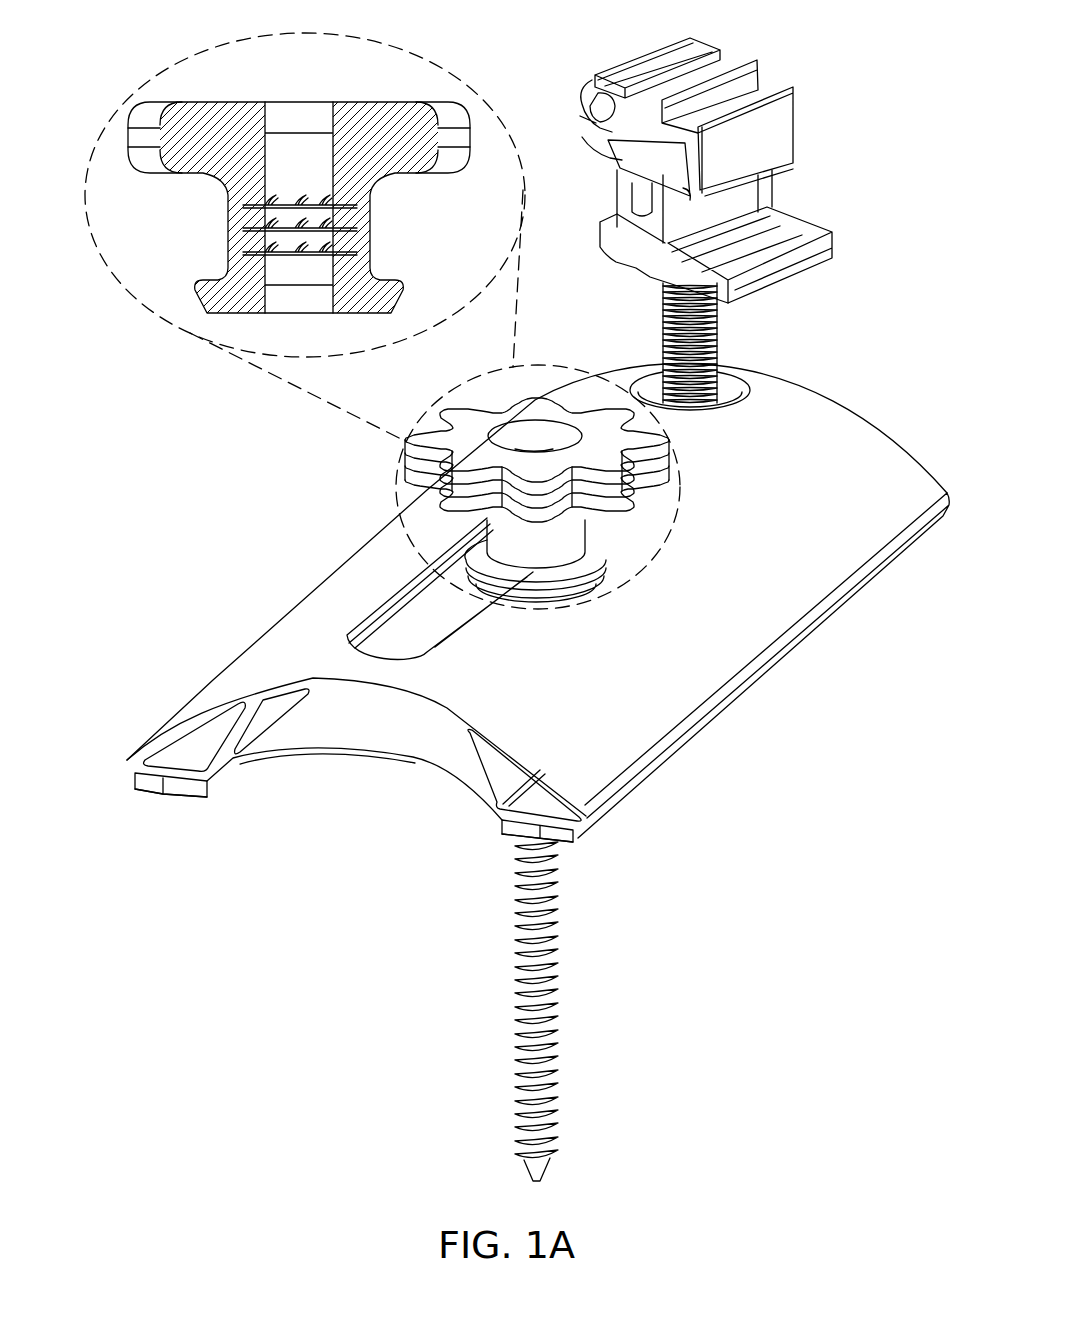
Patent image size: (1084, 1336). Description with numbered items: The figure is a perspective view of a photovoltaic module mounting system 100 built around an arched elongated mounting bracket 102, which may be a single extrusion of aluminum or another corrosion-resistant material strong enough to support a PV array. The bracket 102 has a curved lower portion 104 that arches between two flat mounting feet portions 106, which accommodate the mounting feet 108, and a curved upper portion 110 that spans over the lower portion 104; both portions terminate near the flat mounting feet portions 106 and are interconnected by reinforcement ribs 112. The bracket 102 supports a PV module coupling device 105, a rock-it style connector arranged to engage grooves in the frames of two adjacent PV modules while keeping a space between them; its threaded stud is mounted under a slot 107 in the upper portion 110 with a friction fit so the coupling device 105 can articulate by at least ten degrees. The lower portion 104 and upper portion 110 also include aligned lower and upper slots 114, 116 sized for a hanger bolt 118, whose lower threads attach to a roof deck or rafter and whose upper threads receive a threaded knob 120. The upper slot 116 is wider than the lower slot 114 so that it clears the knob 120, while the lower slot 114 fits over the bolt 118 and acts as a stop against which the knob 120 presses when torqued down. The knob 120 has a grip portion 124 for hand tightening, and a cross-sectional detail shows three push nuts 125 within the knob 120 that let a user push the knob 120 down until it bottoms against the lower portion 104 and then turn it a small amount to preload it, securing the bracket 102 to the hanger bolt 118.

The photovoltaic module mounting system 100 is at (546, 9).
The arched elongated mounting bracket 102 is at (538, 560).
The lower portion 104 is at (360, 748).
The PV module coupling device 105 is at (826, 121).
The flat mounting feet portions 106 is at (163, 778).
The slot 107 is at (737, 385).
The mounting feet 108 is at (177, 795).
The upper portion 110 is at (280, 680).
The reinforcement ribs 112 is at (245, 720).
The lower slot 114 is at (440, 652).
The upper slot 116 is at (420, 568).
The hanger bolt 118 is at (575, 1020).
The threaded knob 120 is at (382, 315).
The grip portion 124 is at (420, 466).
The push nuts 125 is at (243, 253).